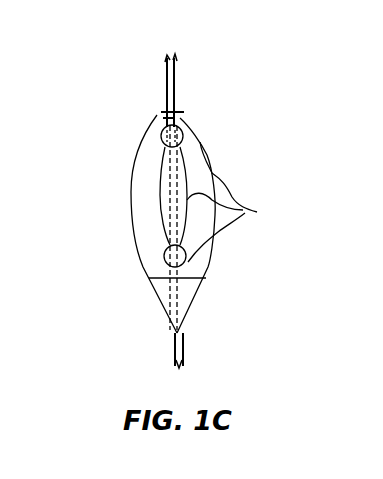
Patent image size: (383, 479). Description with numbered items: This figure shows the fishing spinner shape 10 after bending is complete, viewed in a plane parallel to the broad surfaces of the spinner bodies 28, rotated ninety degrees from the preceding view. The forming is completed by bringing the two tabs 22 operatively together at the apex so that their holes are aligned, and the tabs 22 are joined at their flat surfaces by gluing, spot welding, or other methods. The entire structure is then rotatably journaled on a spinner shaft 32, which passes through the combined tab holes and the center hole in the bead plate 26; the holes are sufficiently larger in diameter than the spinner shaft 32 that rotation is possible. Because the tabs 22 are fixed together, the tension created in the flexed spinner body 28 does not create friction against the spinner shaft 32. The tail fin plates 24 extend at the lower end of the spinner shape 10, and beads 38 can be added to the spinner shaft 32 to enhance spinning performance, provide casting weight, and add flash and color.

The spinner shape 10 is at (213, 127).
The tabs 22 is at (161, 117).
The tail fin plates 24 is at (195, 302).
The bead plate 26 is at (200, 268).
The spinner bodies 28 is at (137, 162).
The spinner shaft 32 is at (176, 73).
The beads 38 is at (257, 212).